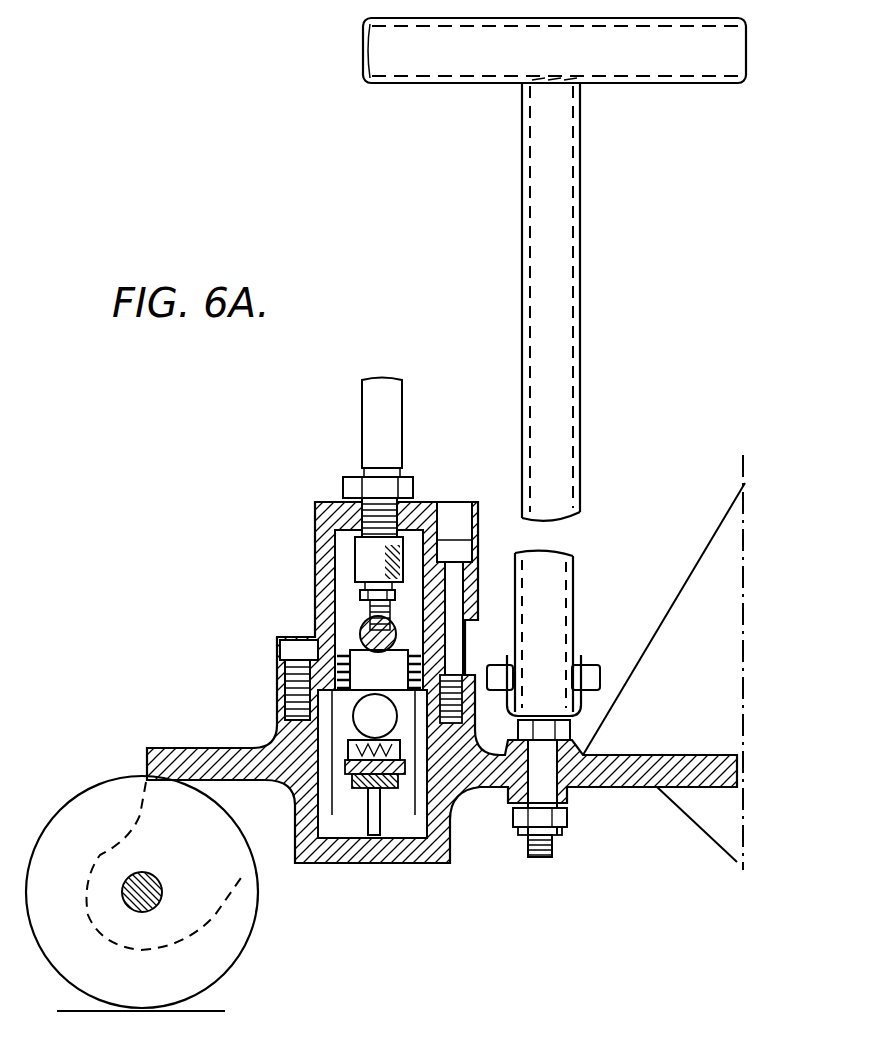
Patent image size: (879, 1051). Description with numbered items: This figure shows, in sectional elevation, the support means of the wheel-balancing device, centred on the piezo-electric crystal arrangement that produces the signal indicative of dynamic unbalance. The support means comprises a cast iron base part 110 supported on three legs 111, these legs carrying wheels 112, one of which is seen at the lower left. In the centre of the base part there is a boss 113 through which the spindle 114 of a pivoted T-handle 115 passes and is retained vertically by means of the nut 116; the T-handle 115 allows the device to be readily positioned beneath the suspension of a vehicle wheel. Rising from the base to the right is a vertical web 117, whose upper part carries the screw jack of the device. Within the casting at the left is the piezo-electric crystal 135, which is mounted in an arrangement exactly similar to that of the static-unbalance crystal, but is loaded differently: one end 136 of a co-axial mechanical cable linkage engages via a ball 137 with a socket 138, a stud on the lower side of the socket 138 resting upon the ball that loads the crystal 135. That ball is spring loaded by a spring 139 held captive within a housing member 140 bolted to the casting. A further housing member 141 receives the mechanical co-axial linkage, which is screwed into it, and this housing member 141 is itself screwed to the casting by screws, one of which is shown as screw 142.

The base part 110 is at (183, 756).
The legs 111 is at (255, 853).
The wheels 112 is at (228, 953).
The boss 113 is at (566, 801).
The spindle 114 is at (556, 850).
The T-handle 115 is at (558, 611).
The nut 116 is at (518, 823).
The vertical web 117 is at (691, 580).
The piezo-electric crystal 135 is at (365, 795).
The end of co-axial mechanical cable linkage 136 is at (345, 602).
The ball 137 is at (352, 626).
The socket 138 is at (290, 640).
The spring 139 is at (290, 692).
The housing member 140 is at (278, 662).
The further housing member 141 is at (322, 500).
The screw 142 is at (456, 586).